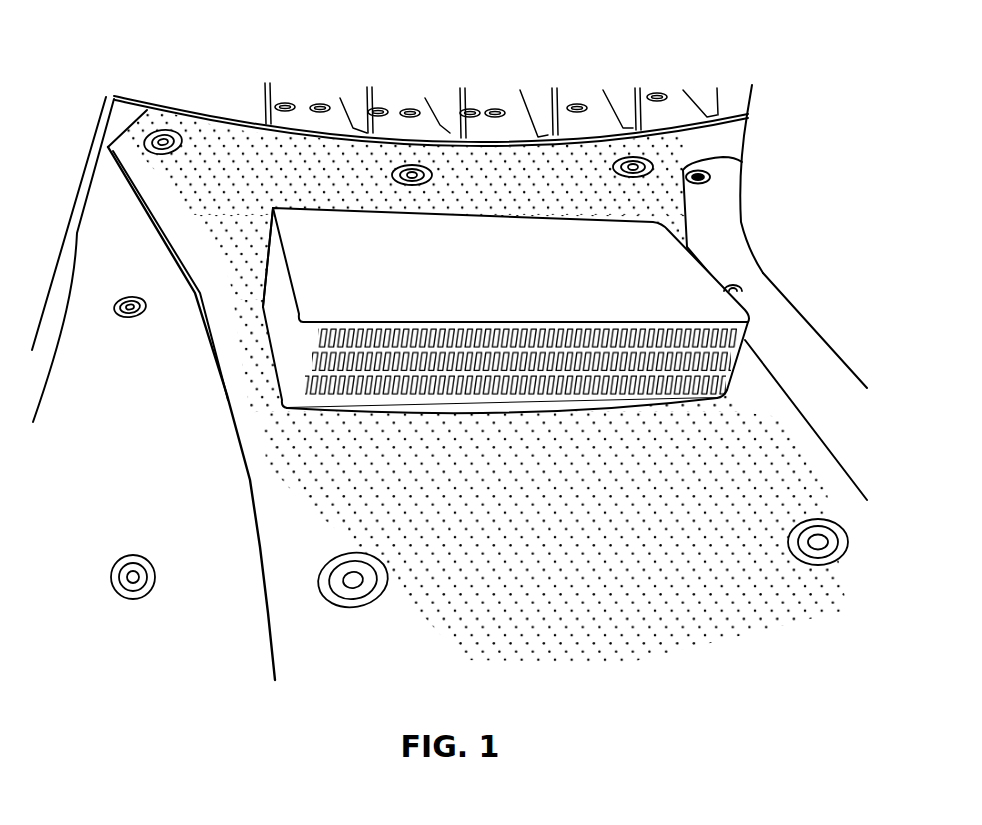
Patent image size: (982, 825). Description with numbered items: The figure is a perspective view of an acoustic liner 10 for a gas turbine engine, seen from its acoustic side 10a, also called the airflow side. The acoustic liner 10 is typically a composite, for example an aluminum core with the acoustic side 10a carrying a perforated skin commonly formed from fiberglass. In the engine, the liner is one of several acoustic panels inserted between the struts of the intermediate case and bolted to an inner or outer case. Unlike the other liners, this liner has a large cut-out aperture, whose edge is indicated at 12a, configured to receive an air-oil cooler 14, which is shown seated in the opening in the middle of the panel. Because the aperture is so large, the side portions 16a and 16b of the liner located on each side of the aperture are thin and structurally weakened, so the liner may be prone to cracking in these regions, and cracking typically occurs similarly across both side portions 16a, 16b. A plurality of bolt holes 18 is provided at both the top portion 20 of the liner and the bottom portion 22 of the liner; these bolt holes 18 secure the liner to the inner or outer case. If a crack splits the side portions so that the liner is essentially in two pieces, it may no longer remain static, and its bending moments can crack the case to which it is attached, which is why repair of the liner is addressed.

The acoustic liner 10 is at (227, 143).
The acoustic side 10a is at (552, 541).
The edge of component housing 12a is at (257, 285).
The air-oil cooler 14 is at (503, 279).
The side portion 16a is at (230, 346).
The side portion 16b is at (747, 382).
The bolt holes 18 is at (163, 140).
The top portion 20 is at (728, 135).
The bottom portion 22 is at (757, 455).